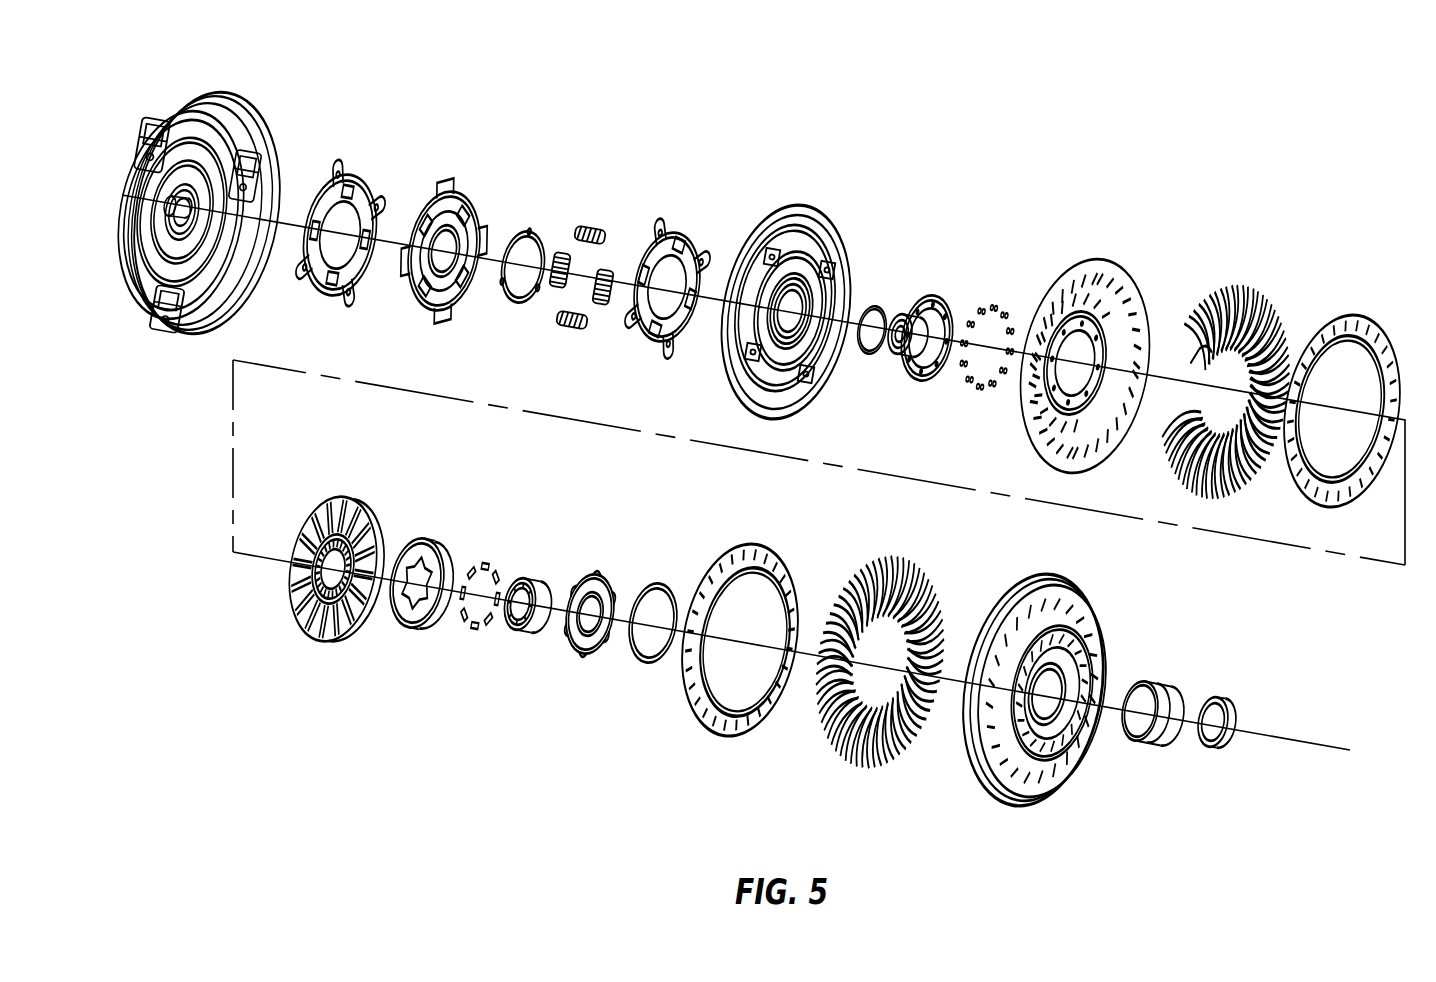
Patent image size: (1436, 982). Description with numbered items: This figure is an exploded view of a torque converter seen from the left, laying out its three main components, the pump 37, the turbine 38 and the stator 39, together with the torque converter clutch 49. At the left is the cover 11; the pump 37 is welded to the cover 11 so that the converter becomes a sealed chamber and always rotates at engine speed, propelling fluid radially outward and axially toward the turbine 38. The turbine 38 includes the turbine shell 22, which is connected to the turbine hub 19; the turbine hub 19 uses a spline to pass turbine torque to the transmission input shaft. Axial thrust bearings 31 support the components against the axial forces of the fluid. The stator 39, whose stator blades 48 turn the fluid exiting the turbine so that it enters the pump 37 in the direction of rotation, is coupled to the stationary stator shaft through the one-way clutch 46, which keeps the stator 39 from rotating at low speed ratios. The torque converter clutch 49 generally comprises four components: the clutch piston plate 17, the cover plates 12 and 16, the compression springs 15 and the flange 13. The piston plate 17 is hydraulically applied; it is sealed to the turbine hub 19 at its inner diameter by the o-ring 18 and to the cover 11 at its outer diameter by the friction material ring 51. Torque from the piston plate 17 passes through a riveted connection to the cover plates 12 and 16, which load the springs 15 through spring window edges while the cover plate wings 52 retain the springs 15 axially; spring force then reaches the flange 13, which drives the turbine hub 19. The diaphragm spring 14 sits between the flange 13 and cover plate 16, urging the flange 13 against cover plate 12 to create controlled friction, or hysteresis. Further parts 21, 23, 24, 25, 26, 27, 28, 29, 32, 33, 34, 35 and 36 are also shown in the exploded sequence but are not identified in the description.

The cover 11 is at (290, 128).
The cover plate 12 is at (385, 165).
The flange 13 is at (482, 188).
The diaphragm spring 14 is at (542, 216).
The compression springs 15 is at (618, 213).
The cover plate 16 is at (705, 213).
The clutch piston plate 17 is at (845, 212).
The o-ring 18 is at (897, 287).
The turbine hub 19 is at (958, 279).
The rivets 21 is at (1010, 299).
The turbine shell 22 is at (1130, 256).
The turbine blades 23 is at (1258, 288).
The turbine core ring 24 is at (1360, 304).
The stator 25 is at (378, 488).
The one-way clutch inner race 26 is at (447, 532).
The sprags 27 is at (500, 550).
The needle bearing 28 is at (555, 558).
The thrust washer 29 is at (620, 558).
The axial thrust bearings 31 is at (680, 572).
The impeller core ring 32 is at (805, 552).
The impeller blades 33 is at (950, 570).
The impeller shell 34 is at (1120, 600).
The impeller hub sleeve 35 is at (1175, 662).
The bushing 36 is at (1230, 690).
The pump 37 is at (1190, 835).
The turbine 38 is at (927, 187).
The stator 39 is at (583, 720).
The one-way clutch 46 is at (553, 643).
The stator blades 48 is at (338, 508).
The torque converter clutch 49 is at (913, 158).
The friction material ring 51 is at (790, 214).
The cover plate wings 52 is at (345, 182).